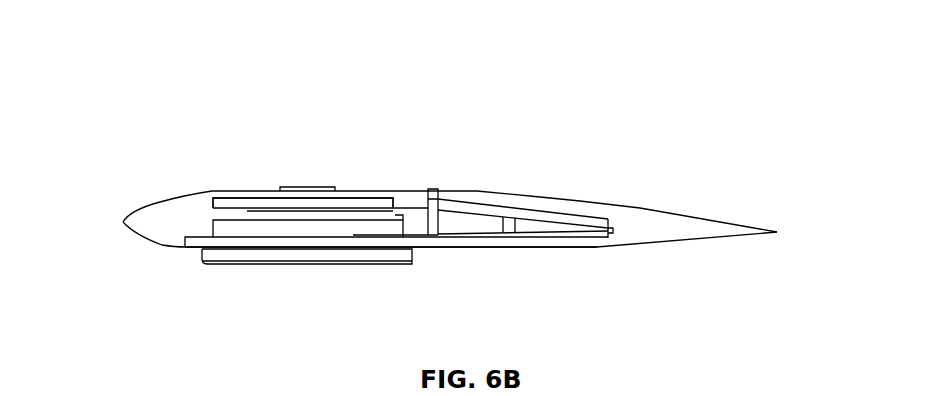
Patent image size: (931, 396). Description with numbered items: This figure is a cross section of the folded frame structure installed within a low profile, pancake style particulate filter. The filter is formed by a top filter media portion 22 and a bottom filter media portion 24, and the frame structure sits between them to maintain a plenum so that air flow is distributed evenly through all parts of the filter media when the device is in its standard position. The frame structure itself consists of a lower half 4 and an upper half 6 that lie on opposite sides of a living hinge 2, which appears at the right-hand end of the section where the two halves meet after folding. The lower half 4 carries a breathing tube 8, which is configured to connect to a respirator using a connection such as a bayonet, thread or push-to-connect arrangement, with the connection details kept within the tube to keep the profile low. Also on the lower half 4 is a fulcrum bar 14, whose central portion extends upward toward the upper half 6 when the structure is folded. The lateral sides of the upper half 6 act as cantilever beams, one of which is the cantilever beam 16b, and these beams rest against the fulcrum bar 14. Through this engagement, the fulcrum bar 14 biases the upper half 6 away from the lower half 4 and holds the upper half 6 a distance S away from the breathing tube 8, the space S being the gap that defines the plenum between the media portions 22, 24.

The living hinge 2 is at (613, 230).
The lower half 4 is at (313, 265).
The upper half 6 is at (320, 187).
The breathing tube 8 is at (243, 219).
The fulcrum bar 14 is at (515, 217).
The cantilever beam 16b is at (494, 212).
The top filter media portion 22 is at (482, 190).
The bottom filter media portion 24 is at (517, 249).
The space S is at (212, 213).